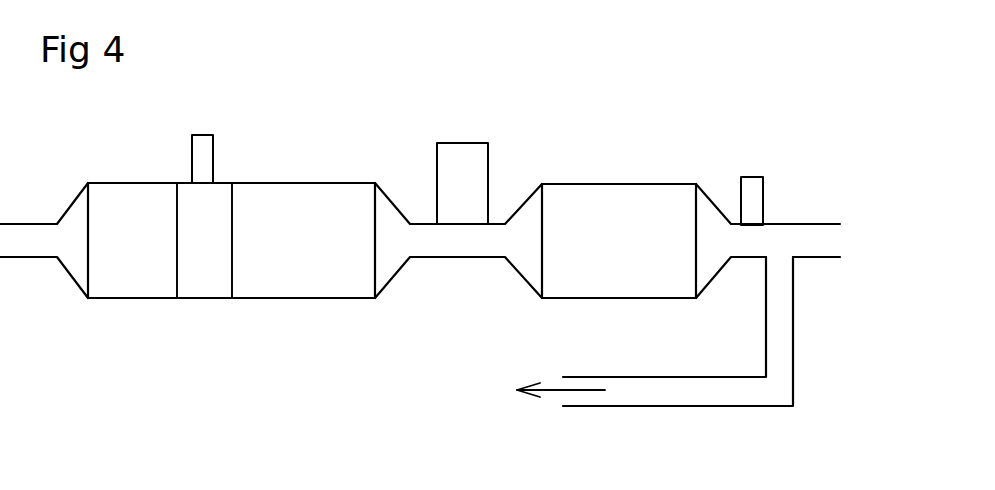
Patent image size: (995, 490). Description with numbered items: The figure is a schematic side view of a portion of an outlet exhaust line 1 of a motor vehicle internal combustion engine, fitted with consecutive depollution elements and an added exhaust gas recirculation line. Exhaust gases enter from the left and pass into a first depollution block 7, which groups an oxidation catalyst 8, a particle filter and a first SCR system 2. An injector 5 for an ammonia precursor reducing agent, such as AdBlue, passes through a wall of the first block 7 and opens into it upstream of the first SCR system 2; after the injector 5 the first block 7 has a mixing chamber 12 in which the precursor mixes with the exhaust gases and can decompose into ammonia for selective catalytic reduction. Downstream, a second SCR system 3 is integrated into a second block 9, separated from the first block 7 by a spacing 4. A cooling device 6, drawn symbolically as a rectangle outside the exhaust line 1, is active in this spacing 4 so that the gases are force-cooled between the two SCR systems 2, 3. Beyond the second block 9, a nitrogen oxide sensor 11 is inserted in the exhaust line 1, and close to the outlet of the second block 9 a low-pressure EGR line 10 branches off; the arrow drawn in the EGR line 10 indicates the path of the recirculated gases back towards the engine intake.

The exhaust line 1 is at (24, 211).
The first SCR system 2 is at (312, 257).
The second SCR system 3 is at (618, 259).
The spacing 4 is at (452, 238).
The injector 5 is at (201, 150).
The cooling device 6 is at (477, 157).
The first depollution block 7 is at (314, 170).
The oxidation catalyst 8 is at (135, 263).
The second block 9 is at (633, 170).
The low-pressure EGR line 10 is at (716, 392).
The nitrogen oxide sensor 11 is at (752, 193).
The mixing chamber 12 is at (207, 257).